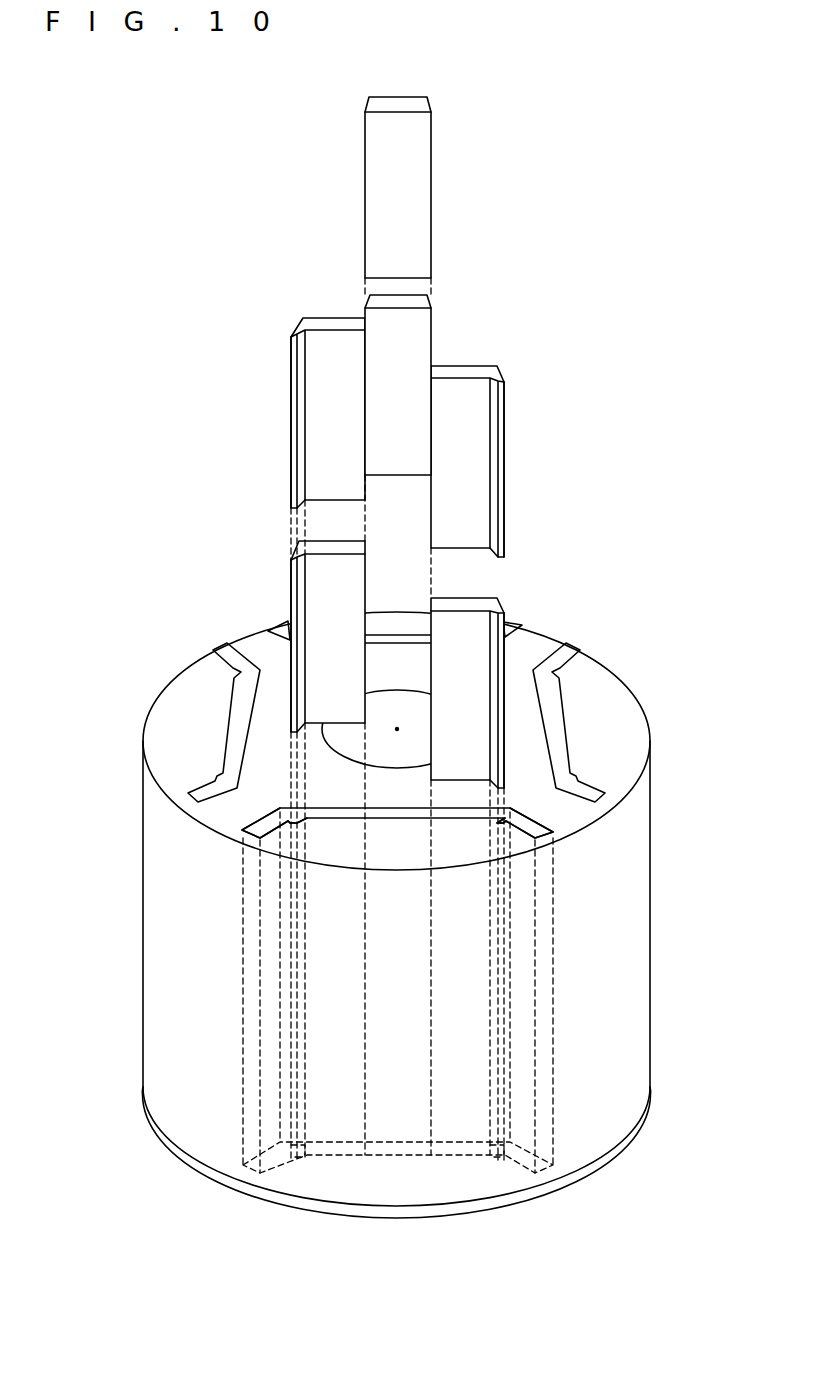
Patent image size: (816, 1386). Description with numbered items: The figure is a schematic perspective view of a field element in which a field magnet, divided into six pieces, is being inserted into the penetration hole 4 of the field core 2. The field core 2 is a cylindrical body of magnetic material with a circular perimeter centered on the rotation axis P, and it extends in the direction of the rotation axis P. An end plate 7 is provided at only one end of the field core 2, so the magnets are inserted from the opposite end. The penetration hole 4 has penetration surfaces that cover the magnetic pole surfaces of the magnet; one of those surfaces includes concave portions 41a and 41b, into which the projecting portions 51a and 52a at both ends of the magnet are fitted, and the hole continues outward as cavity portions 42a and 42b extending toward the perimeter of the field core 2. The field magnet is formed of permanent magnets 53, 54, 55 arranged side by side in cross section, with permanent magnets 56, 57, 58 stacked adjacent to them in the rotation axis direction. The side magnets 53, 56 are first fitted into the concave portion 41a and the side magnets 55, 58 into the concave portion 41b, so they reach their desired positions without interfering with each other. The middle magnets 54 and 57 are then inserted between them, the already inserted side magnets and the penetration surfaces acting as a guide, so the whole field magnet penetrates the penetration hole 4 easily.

The field core 2 is at (636, 937).
The end plate 7 is at (606, 1153).
The penetration hole 4 is at (228, 737).
The concave portion 41a is at (296, 823).
The concave portion 41b is at (497, 823).
The cavity portion 42a is at (266, 826).
The cavity portion 42b is at (528, 826).
The projecting portion 51a is at (291, 421).
The projecting portion 52a is at (504, 421).
The permanent magnet 53 is at (337, 562).
The permanent magnet 54 is at (393, 463).
The permanent magnet 55 is at (454, 620).
The permanent magnet 56 is at (333, 338).
The permanent magnet 57 is at (420, 151).
The permanent magnet 58 is at (463, 388).
The rotation axis P is at (397, 729).